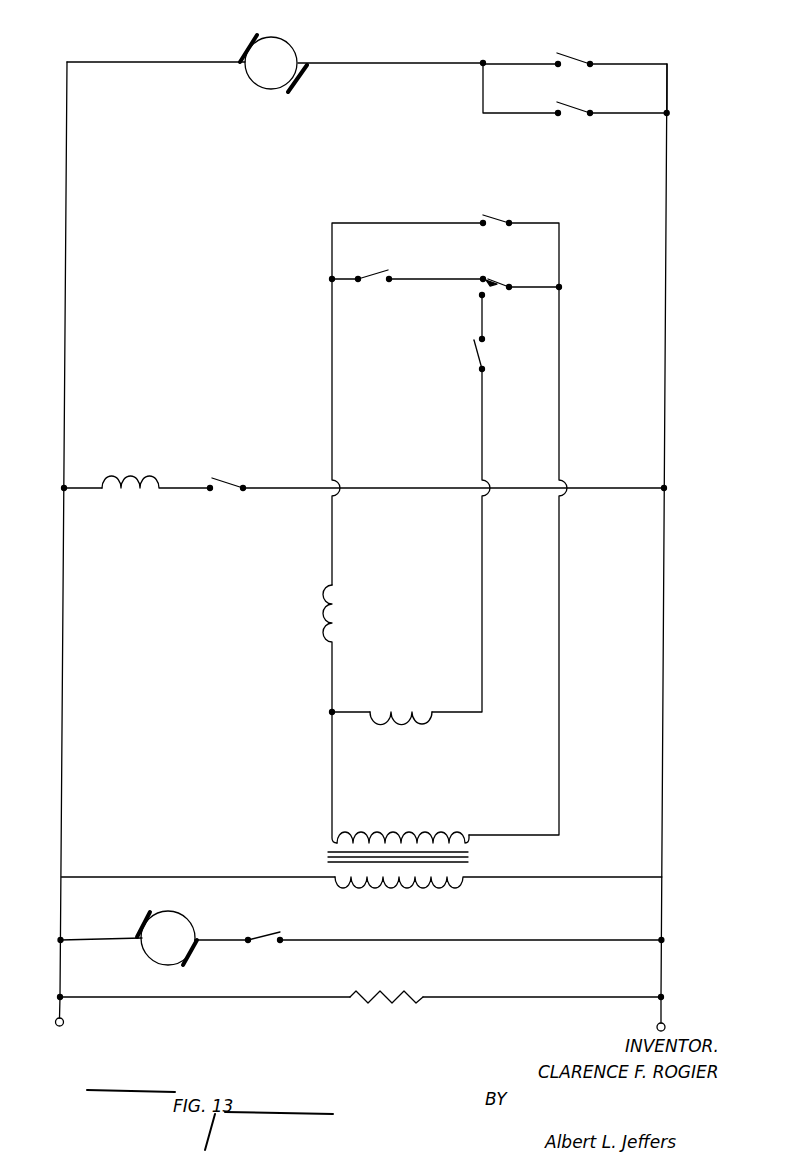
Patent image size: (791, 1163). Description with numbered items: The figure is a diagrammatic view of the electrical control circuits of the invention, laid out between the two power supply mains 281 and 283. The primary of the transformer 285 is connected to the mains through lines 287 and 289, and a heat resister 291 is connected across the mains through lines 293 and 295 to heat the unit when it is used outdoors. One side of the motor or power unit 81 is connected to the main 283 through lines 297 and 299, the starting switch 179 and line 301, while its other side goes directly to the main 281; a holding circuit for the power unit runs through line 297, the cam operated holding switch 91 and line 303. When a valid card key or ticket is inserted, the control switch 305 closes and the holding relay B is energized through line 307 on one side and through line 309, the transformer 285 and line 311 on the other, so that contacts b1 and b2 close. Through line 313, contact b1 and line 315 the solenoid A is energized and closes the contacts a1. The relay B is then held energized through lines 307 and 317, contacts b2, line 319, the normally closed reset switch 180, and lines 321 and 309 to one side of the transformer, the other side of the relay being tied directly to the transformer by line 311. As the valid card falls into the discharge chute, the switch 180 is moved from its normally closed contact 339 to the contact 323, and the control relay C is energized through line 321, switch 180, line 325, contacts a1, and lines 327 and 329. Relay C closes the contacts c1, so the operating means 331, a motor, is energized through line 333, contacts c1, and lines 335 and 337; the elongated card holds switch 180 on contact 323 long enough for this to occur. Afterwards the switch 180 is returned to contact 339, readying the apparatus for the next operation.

The motor or power unit 81 is at (291, 43).
The line 297 is at (402, 62).
The line 299 is at (483, 94).
The cam operated holding switch 91 is at (570, 60).
The line 303 is at (638, 58).
The starting switch 179 is at (572, 112).
The line 301 is at (628, 114).
The power supply main 281 is at (62, 327).
The power supply main 283 is at (672, 335).
The line 307 is at (405, 222).
The control switch 305 is at (498, 218).
The line 309 is at (562, 405).
The line 317 is at (346, 284).
The line 319 is at (433, 278).
The contact 339 is at (488, 281).
The reset switch 180 is at (501, 284).
The line 321 is at (538, 290).
The contact 323 is at (479, 295).
The line 325 is at (484, 322).
The line 327 is at (480, 405).
The line 315 is at (88, 490).
The line 313 is at (420, 492).
The line 329 is at (355, 712).
The line 311 is at (330, 768).
The transformer 285 is at (403, 835).
The line 287 is at (183, 877).
The line 289 is at (576, 877).
The line 337 is at (100, 937).
The operating means 331 is at (153, 951).
The line 335 is at (216, 938).
The line 333 is at (394, 940).
The line 293 is at (242, 997).
The heat resister 291 is at (388, 993).
The line 295 is at (524, 997).
The solenoid A is at (124, 480).
The holding relay B is at (348, 618).
The control relay C is at (405, 708).
The contact b1 is at (228, 482).
The contact b2 is at (370, 272).
The contact a1 is at (477, 349).
The contact c1 is at (271, 933).